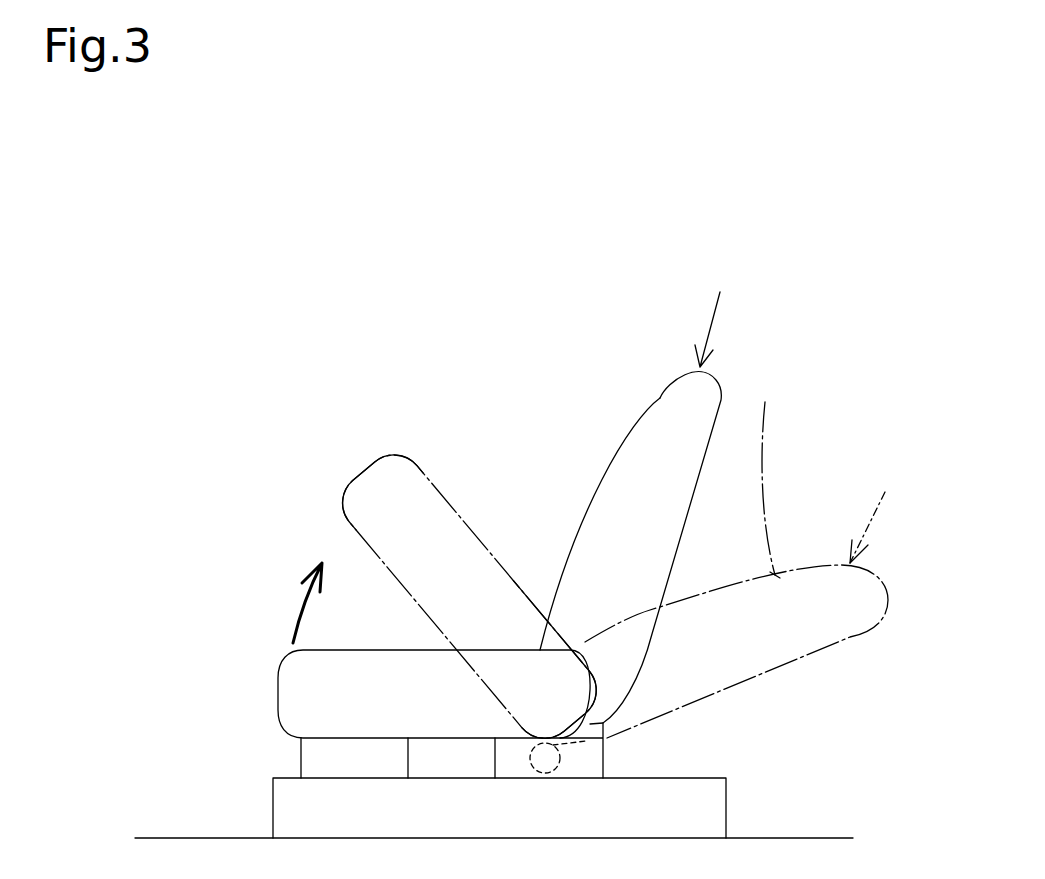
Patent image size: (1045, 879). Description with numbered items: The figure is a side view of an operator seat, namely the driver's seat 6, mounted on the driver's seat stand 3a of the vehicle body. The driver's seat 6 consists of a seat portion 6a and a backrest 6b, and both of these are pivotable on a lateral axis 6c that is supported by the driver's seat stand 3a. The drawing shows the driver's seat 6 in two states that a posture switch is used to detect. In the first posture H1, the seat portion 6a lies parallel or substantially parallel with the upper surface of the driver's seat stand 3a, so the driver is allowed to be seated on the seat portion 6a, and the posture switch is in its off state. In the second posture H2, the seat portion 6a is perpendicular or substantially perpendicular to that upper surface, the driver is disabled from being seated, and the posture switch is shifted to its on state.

The driver's seat 6 is at (608, 425).
The seat portion 6a is at (417, 605).
The backrest 6b is at (717, 418).
The lateral axis 6c is at (560, 753).
The driver's seat stand 3a is at (718, 811).
The first posture H1 is at (719, 313).
The second posture H2 is at (878, 512).